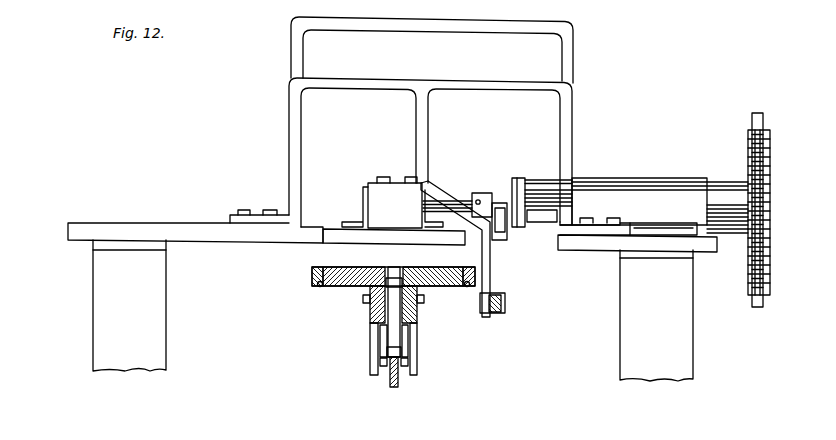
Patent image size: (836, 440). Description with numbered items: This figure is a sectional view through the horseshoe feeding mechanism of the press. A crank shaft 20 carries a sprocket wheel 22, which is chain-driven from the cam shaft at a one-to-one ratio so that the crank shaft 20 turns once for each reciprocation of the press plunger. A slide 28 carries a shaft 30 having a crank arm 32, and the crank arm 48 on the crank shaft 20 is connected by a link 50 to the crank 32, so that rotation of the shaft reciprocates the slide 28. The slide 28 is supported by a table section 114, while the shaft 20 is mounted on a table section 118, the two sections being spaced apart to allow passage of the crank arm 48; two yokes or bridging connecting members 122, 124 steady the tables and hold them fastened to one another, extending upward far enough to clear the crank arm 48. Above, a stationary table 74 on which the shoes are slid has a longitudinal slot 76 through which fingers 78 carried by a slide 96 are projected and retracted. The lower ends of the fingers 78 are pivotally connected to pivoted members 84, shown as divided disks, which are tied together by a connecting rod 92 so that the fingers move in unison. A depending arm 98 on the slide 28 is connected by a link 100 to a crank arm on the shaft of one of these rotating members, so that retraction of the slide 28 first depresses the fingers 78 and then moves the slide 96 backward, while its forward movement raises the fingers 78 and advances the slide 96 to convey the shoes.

The bridging connecting member 124 is at (420, 32).
The bridging connecting member 122 is at (345, 84).
The table section 114 is at (203, 241).
The shaft 30 is at (432, 243).
The slide 28 is at (380, 208).
The crank arm 32 is at (490, 192).
The depending arm 98 is at (440, 195).
The link 50 is at (497, 247).
The crank arm 48 is at (520, 203).
The crank shaft 20 is at (733, 233).
The table section 118 is at (608, 252).
The sprocket wheel 22 is at (757, 310).
The stationary table 74 is at (367, 263).
The slide 96 is at (360, 288).
The longitudinal slot 76 is at (390, 266).
The fingers 78 is at (395, 303).
The pivoted members 84 is at (382, 366).
The connecting rod 92 is at (393, 383).
The link 100 is at (498, 320).